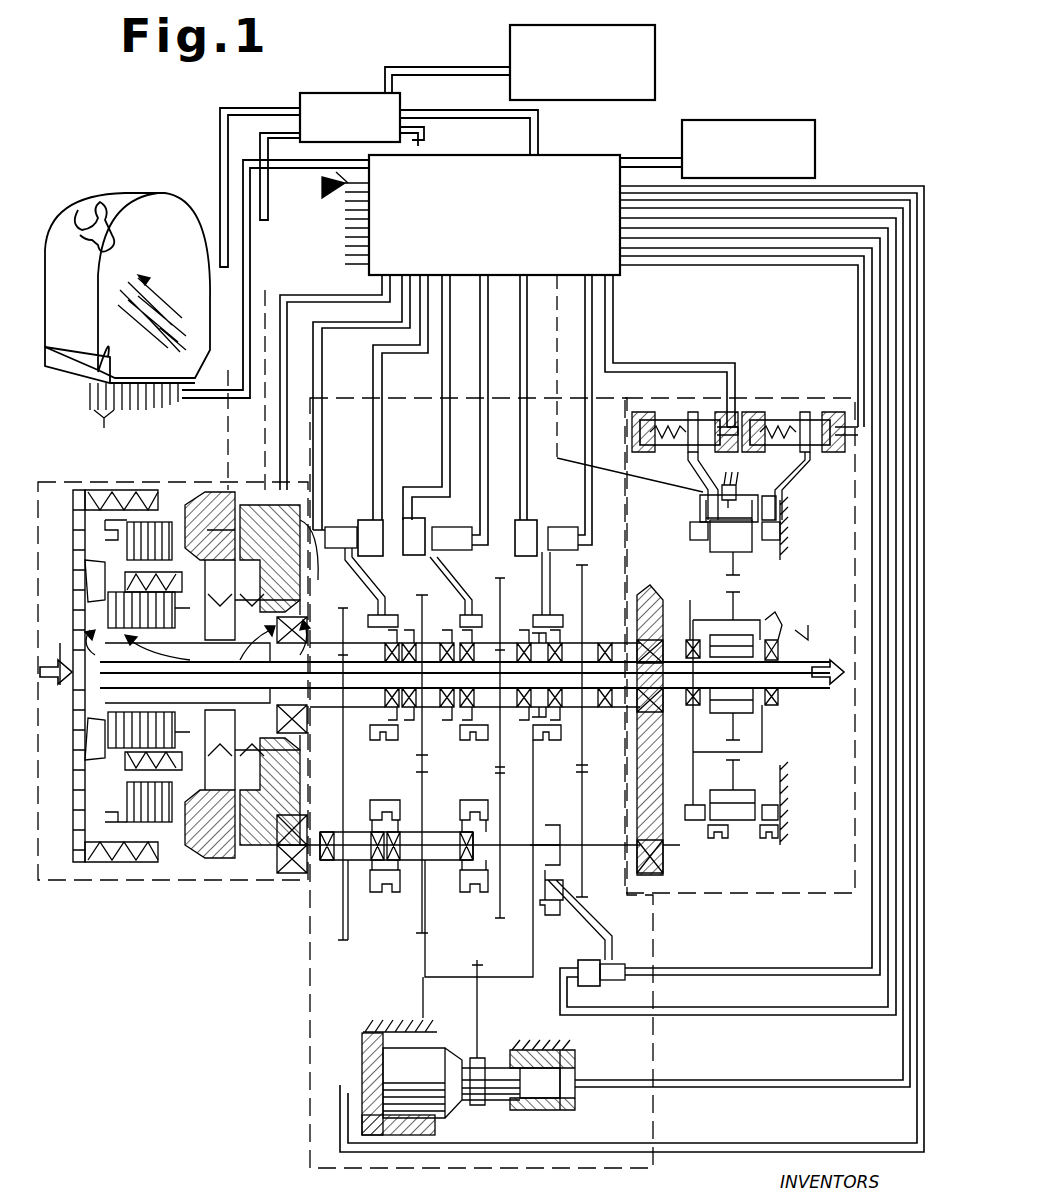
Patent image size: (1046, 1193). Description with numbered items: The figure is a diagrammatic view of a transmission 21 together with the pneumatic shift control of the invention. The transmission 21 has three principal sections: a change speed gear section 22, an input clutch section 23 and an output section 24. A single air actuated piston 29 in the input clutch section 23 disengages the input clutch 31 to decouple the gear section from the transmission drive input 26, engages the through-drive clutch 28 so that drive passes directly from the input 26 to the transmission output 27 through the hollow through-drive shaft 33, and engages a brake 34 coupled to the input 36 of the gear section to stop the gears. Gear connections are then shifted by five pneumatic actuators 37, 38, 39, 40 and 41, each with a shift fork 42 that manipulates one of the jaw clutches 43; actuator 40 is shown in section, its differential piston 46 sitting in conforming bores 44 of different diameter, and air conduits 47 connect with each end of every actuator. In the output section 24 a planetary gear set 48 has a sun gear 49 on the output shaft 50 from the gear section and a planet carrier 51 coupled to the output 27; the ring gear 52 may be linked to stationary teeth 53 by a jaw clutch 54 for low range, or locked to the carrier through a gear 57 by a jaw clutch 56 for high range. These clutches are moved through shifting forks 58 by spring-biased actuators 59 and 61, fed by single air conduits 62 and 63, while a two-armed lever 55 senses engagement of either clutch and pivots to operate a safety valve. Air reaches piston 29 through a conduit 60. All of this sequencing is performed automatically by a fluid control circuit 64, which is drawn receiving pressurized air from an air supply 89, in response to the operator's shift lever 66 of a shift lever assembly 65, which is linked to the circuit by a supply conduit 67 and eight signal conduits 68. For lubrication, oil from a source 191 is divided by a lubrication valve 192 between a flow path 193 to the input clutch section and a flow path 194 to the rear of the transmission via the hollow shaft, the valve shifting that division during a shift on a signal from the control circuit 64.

The transmission 21 is at (270, 1132).
The change speed gear section 22 is at (308, 988).
The input clutch section 23 is at (70, 884).
The output section 24 is at (804, 896).
The transmission drive input 26 is at (56, 680).
The transmission output 27 is at (828, 712).
The through-drive clutch 28 is at (165, 712).
The air actuated piston 29 is at (232, 530).
The input clutch 31 is at (165, 522).
The through-drive shaft 33 is at (225, 676).
The brake 34 is at (200, 830).
The input of the change speed gear section 36 is at (284, 712).
The pneumatic actuator 37 is at (332, 530).
The pneumatic actuator 38 is at (416, 538).
The pneumatic actuator 39 is at (528, 548).
The pneumatic actuator 40 is at (578, 1044).
The pneumatic actuator 41 is at (632, 982).
The shift fork 42 is at (360, 566).
The jaw clutches 43 is at (530, 613).
The bores 44 is at (432, 1112).
The piston 46 is at (368, 1068).
The air conduits 47 is at (592, 492).
The planetary gear set 48 is at (726, 876).
The sun gear 49 is at (742, 698).
The output shaft 50 is at (680, 695).
The planet carrier 51 is at (700, 598).
The ring gear 52 is at (736, 558).
The stationary teeth 53 is at (782, 538).
The jaw clutch 54 is at (782, 522).
The lever 55 is at (768, 508).
The jaw clutch 56 is at (700, 520).
The gear 57 is at (690, 532).
The shifting forks 58 is at (692, 474).
The pneumatic actuator 59 is at (790, 418).
The conduit 60 is at (336, 300).
The pneumatic actuator 61 is at (680, 418).
The air conduit 62 is at (860, 320).
The air conduit 63 is at (684, 368).
The fluid control circuit 64 is at (494, 215).
The shift lever assembly 65 is at (52, 408).
The shift lever 66 is at (66, 200).
The supply conduit 67 is at (242, 185).
The air conduits 68 is at (340, 192).
The air supply 89 is at (698, 122).
The oil source 191 is at (520, 62).
The lubrication valve 192 is at (345, 96).
The flow path 193 is at (222, 130).
The flow path 194 is at (282, 108).